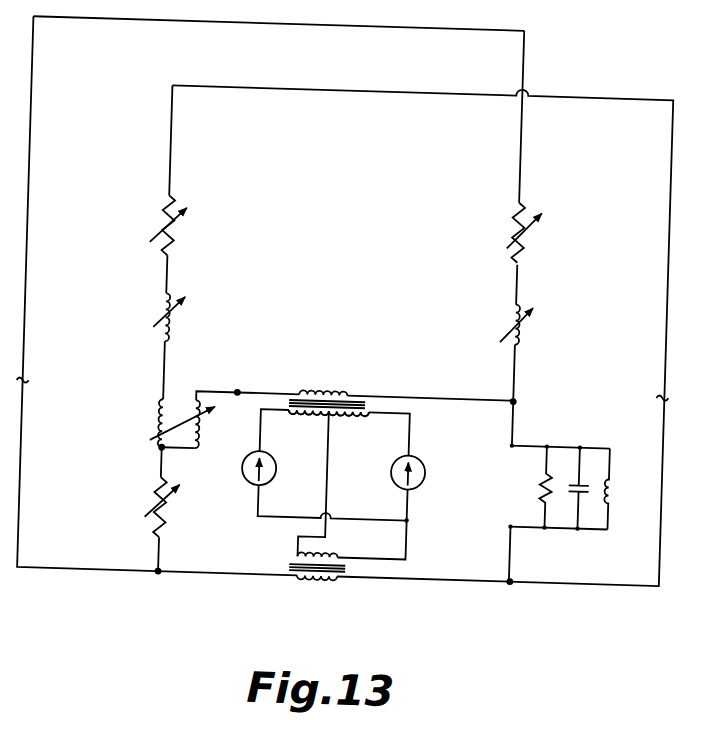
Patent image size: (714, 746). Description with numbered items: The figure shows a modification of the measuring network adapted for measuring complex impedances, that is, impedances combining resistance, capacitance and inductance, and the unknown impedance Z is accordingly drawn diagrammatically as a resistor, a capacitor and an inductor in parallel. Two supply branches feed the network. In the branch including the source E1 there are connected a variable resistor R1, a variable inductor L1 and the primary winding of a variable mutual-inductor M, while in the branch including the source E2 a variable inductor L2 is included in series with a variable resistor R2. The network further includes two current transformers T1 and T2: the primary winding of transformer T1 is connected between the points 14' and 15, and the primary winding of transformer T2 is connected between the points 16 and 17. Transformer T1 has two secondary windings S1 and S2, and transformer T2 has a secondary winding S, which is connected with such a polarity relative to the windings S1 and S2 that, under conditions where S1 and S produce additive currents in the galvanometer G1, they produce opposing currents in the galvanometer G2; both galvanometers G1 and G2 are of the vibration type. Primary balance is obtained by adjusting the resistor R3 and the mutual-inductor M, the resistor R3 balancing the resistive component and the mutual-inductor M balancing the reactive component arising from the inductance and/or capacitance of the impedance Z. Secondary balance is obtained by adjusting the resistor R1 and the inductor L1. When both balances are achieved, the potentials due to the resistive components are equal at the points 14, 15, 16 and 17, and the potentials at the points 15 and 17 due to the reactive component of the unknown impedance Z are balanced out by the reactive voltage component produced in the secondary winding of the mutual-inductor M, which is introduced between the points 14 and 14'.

The point 14 is at (144, 463).
The point 14' is at (236, 380).
The point 15 is at (516, 397).
The point 16 is at (165, 580).
The point 17 is at (516, 580).
The variable resistor R1 is at (168, 243).
The variable resistor R2 is at (510, 211).
The resistor R3 is at (165, 534).
The variable inductor L1 is at (161, 312).
The variable inductor L2 is at (519, 332).
The variable mutual-inductor M is at (160, 421).
The current transformer T1 is at (318, 391).
The secondary winding S1 is at (320, 418).
The secondary winding S2 is at (346, 418).
The galvanometer G1 is at (244, 473).
The galvanometer G2 is at (427, 476).
The secondary winding S is at (328, 557).
The current transformer T2 is at (344, 616).
The unknown impedance Z is at (617, 527).
The source E1 is at (647, 398).
The source E2 is at (41, 379).